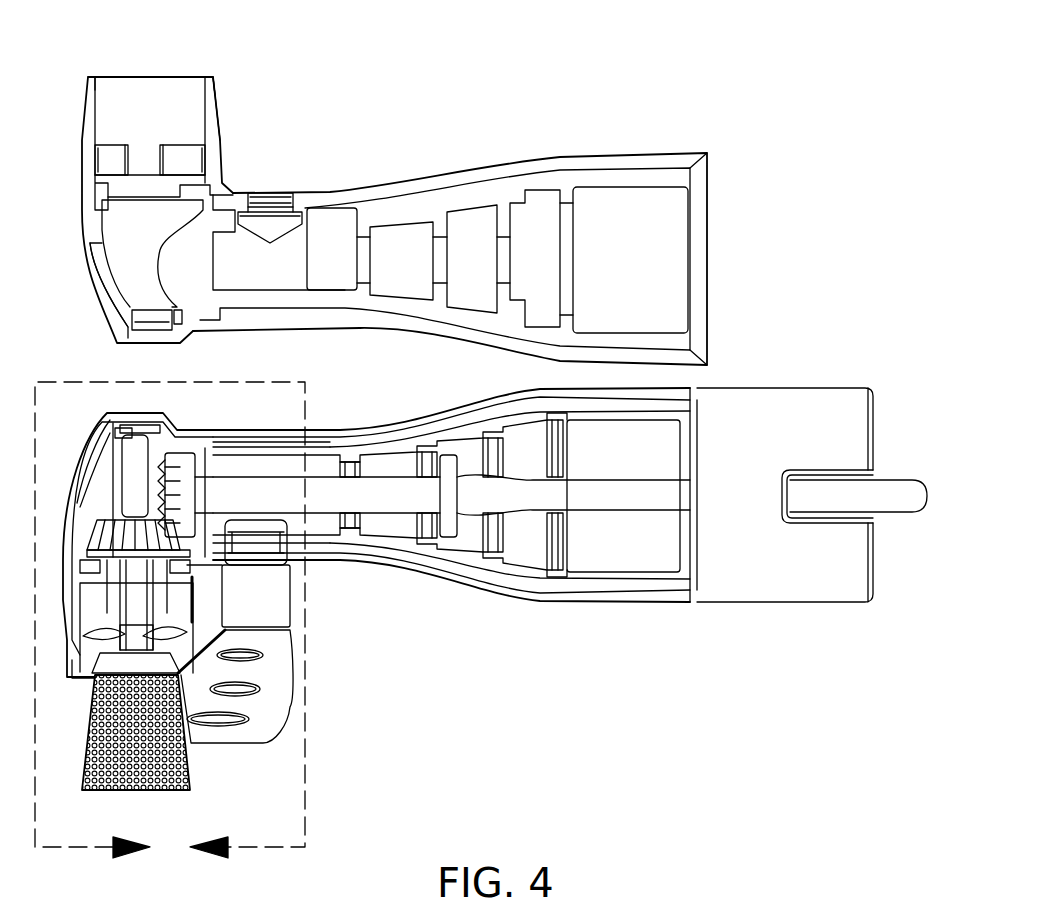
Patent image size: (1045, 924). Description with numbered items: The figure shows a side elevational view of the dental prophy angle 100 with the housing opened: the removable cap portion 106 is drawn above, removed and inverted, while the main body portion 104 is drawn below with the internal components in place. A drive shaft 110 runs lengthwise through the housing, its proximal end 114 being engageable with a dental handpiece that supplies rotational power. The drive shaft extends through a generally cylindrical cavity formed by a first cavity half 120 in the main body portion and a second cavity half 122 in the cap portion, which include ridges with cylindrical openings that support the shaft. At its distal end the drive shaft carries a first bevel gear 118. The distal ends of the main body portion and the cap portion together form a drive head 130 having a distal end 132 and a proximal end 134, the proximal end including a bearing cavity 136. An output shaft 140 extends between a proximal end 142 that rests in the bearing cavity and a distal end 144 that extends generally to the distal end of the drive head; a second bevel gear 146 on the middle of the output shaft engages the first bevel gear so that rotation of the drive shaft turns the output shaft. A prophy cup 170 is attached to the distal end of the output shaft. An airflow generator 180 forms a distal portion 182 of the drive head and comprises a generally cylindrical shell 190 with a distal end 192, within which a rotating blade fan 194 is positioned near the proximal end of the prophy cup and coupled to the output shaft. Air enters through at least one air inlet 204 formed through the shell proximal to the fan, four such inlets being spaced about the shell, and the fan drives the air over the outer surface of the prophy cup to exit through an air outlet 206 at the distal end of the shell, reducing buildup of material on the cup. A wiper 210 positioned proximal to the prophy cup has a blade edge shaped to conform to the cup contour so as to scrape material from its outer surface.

The dental prophy angle 100 is at (803, 272).
The main body portion 104 is at (403, 640).
The removable cap portion 106 is at (338, 118).
The drive shaft 110 is at (600, 487).
The proximal end of the drive shaft 114 is at (923, 480).
The first bevel gear 118 is at (300, 453).
The first cavity half 120 is at (517, 540).
The second cavity half 122 is at (400, 237).
The drive head 130 is at (90, 303).
The distal end of the drive head 132 is at (118, 76).
The proximal end of the drive head 134 is at (150, 343).
The bearing cavity 136 is at (182, 318).
The output shaft 140 is at (183, 503).
The proximal end of the output shaft 142 is at (140, 477).
The distal end of the output shaft 144 is at (175, 640).
The second bevel gear 146 is at (115, 517).
The prophy cup 170 is at (140, 793).
The airflow generator 180 is at (63, 660).
The distal portion of the drive head 182 is at (218, 128).
The cylindrical shell 190 is at (82, 118).
The distal end of the shell 192 is at (206, 76).
The rotating blade fan 194 is at (228, 655).
The air inlet 204 is at (143, 200).
The air outlet 206 is at (93, 677).
The wiper 210 is at (260, 720).